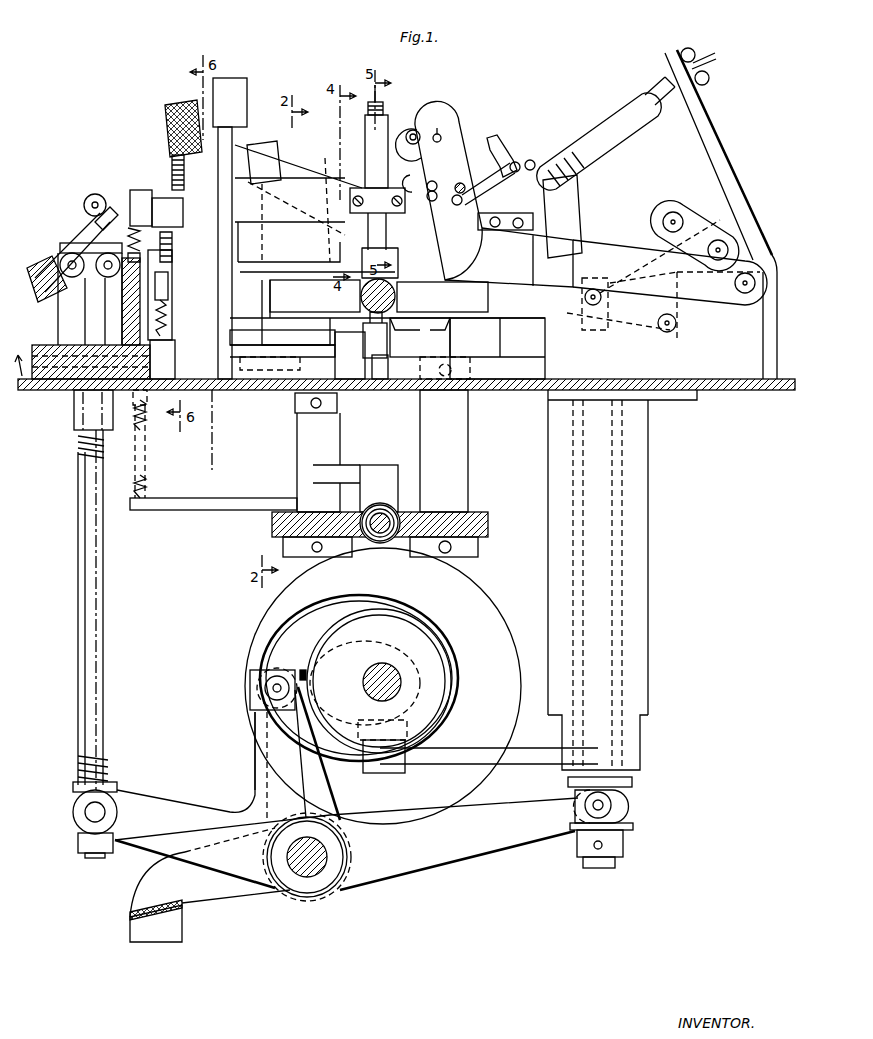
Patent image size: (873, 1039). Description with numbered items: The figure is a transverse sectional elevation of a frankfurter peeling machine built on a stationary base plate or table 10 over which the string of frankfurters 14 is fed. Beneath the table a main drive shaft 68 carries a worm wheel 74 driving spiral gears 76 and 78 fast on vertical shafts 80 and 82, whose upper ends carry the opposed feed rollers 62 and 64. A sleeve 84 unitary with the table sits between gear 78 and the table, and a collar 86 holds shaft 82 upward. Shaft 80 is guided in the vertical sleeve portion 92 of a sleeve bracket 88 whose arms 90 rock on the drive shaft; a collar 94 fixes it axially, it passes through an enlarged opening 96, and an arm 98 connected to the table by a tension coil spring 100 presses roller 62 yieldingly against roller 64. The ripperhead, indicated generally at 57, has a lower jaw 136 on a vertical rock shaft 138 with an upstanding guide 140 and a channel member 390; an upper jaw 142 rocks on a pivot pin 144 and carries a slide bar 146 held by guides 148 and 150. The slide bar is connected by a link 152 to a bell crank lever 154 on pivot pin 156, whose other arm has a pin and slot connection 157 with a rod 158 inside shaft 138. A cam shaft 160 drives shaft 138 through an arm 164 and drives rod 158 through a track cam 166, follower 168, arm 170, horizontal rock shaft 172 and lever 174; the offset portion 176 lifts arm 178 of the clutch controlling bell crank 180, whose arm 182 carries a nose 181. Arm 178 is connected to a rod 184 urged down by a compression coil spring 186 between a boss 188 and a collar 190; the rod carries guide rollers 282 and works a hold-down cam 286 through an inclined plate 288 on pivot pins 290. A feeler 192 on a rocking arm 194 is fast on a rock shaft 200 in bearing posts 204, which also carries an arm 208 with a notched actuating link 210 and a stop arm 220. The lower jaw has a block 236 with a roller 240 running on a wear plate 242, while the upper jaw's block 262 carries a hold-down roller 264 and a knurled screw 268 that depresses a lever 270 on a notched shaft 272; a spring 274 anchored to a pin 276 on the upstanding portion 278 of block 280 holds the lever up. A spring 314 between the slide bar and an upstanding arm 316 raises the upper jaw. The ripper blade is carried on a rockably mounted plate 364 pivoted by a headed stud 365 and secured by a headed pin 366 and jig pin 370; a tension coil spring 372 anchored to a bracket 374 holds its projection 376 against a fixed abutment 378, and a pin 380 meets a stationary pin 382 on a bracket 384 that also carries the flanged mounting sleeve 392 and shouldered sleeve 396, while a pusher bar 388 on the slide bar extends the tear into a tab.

The base plate or table 10 is at (768, 392).
The string of frankfurters or sausages 14 is at (396, 294).
The control lever 57 is at (466, 115).
The feed roller 62 is at (294, 284).
The feed roller 64 is at (488, 298).
The main drive shaft 68 is at (385, 541).
The worm wheel 74 is at (370, 545).
The spiral gear 76 is at (272, 522).
The spiral gear 78 is at (490, 519).
The vertical shaft 80 is at (325, 366).
The vertical shaft 82 is at (465, 343).
The sleeve 84 is at (468, 445).
The collar 86 is at (470, 366).
The sleeve bracket 88 is at (368, 458).
The arms 90 is at (378, 508).
The vertical sleeve portion 92 is at (300, 443).
The collar 94 is at (295, 403).
The opening 96 is at (292, 374).
The arm 98 is at (172, 510).
The tension coil spring 100 is at (147, 484).
The lower jaw 136 is at (533, 367).
The vertical rock shaft 138 is at (620, 475).
The upstanding guide 140 is at (232, 126).
The upper jaw 142 is at (174, 186).
The pivot pin 144 is at (746, 295).
The slide bar 146 is at (312, 156).
The guide 148 is at (265, 146).
The guide 150 is at (570, 188).
The link 152 is at (693, 222).
The bell crank lever 154 is at (672, 284).
The pivot pin 156 is at (667, 333).
The pin and slot connection 157 is at (577, 300).
The rod 158 is at (648, 608).
The cam shaft 160 is at (370, 688).
The arm 164 is at (527, 755).
The track cam 166 is at (258, 628).
The follower 168 is at (280, 670).
The arm 170 is at (322, 800).
The horizontal rock shaft 172 is at (330, 857).
The lever 174 is at (240, 905).
The offset portion 176 is at (168, 944).
The arm 178 is at (130, 848).
The clutch controlling bell crank lever 180 is at (193, 796).
The nose 181 is at (307, 676).
The arm 182 is at (254, 740).
The rod 184 is at (110, 622).
The compression coil spring 186 is at (106, 770).
The boss 188 is at (104, 438).
The collar 190 is at (73, 812).
The feeler 192 is at (396, 342).
The rocking arm 194 is at (381, 380).
The rock shaft 200 is at (282, 341).
The bearing posts 204 is at (82, 258).
The arm 208 is at (232, 380).
The notched actuating link 210 is at (262, 305).
The stop arm 220 is at (300, 271).
The block 236 is at (262, 320).
The roller 240 is at (176, 370).
The wear plate 242 is at (228, 392).
The block 262 is at (183, 212).
The hold-down roller 264 is at (140, 190).
The knurled screw 268 is at (173, 108).
The lever 270 is at (172, 303).
The notched supporting shaft 272 is at (76, 410).
The spring 274 is at (170, 320).
The pin 276 is at (150, 288).
The upstanding portion 278 is at (112, 205).
The block 280 is at (24, 392).
The guide rollers 282 is at (100, 280).
The hold-down cam 286 is at (93, 193).
The inclined plate 288 is at (56, 248).
The pivot pins 290 is at (34, 262).
The spring 314 is at (550, 158).
The upstanding arm 316 is at (670, 63).
The rockably mounted plate 364 is at (407, 126).
The headed stud 365 is at (407, 182).
The headed pin 366 is at (432, 181).
The jig pin 370 is at (435, 125).
The tension coil spring 372 is at (513, 160).
The bracket 374 is at (490, 138).
The projection 376 is at (464, 201).
The fixed abutment 378 is at (462, 183).
The pin 380 is at (415, 129).
The stationary pin 382 is at (365, 151).
The bracket 384 is at (262, 228).
The pusher bar 388 is at (478, 254).
The channel member 390 is at (450, 330).
The flanged mounting sleeve 392 is at (350, 199).
The shouldered sleeve 396 is at (368, 108).